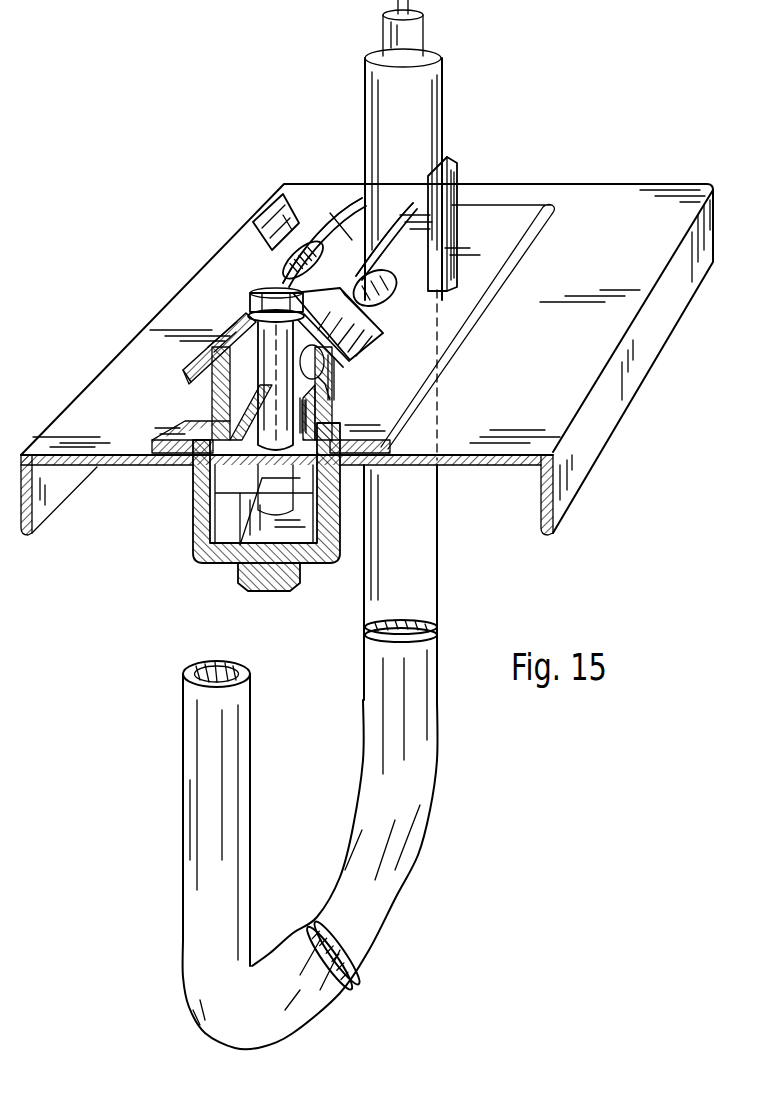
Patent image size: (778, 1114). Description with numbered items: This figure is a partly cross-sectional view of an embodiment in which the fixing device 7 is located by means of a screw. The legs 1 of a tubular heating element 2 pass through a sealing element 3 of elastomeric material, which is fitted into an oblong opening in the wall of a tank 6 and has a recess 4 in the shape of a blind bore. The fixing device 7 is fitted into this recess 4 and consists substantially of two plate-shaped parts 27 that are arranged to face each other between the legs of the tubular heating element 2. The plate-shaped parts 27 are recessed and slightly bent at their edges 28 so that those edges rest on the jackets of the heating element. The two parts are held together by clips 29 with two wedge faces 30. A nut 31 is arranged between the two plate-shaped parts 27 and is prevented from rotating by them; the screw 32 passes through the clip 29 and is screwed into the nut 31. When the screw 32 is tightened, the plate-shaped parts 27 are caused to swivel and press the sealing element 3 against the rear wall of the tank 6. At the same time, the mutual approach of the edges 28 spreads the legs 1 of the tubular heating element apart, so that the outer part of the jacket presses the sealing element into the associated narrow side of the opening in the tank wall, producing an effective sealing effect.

The legs 1 is at (427, 152).
The tubular heating element 2 is at (416, 860).
The sealing element 3 is at (200, 503).
The recess 4 is at (316, 563).
The tank 6 is at (615, 418).
The fixing device 7 is at (318, 222).
The plate-shaped parts 27 is at (413, 283).
The edges 28 is at (363, 200).
The clips 29 is at (232, 334).
The wedge faces 30 is at (212, 389).
The nut 31 is at (240, 545).
The screw 32 is at (172, 419).